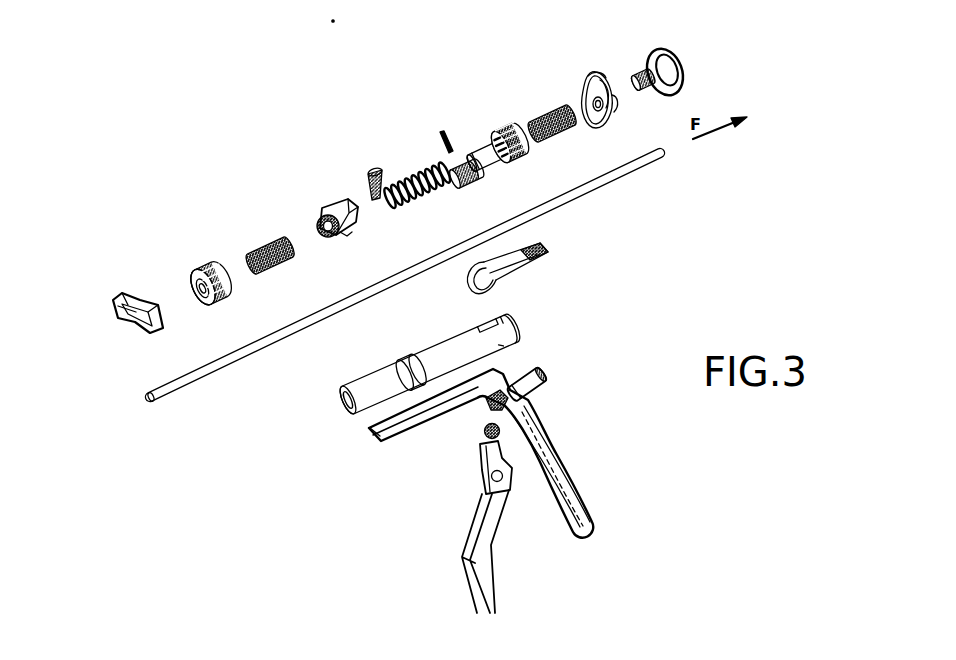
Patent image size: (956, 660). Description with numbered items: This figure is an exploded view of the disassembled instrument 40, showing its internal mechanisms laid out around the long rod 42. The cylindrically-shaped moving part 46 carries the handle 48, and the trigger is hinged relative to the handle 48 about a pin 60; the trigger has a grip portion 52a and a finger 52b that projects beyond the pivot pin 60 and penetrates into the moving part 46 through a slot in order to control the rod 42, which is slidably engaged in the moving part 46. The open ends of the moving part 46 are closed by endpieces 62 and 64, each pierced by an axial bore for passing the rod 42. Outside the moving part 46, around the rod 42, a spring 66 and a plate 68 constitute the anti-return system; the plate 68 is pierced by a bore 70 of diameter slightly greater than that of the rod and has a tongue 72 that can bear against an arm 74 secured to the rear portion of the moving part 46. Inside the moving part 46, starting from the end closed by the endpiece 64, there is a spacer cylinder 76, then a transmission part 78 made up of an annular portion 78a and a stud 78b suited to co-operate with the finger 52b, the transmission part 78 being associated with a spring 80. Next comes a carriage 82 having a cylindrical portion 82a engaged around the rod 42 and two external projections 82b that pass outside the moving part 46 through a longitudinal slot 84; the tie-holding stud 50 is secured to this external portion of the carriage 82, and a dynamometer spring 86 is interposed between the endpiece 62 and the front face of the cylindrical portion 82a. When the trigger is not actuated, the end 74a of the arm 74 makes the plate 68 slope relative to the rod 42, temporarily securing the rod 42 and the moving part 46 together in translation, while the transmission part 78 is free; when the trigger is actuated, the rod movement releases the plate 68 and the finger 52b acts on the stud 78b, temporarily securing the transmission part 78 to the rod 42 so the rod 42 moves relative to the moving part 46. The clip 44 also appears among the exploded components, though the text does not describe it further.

The instrument 40 is at (306, 124).
The rod 42 is at (622, 172).
The clip 44 is at (118, 296).
The moving part 46 is at (520, 347).
The handle 48 is at (586, 488).
The tie-holding stud 50 is at (372, 172).
The grip portion 52a is at (498, 600).
The finger 52b is at (482, 470).
The pin 60 is at (486, 433).
The endpiece 62 is at (193, 268).
The endpiece 64 is at (513, 122).
The spring 66 is at (545, 115).
The plate 68 is at (613, 100).
The bore 70 is at (592, 126).
The tongue 72 is at (592, 76).
The arm 74 is at (515, 270).
The end of the arm 74a is at (536, 250).
The spacer cylinder 76 is at (478, 152).
The transmission part 78 is at (440, 130).
The annular portion 78a is at (478, 172).
The stud 78b is at (458, 188).
The spring 80 is at (410, 178).
The carriage 82 is at (302, 211).
The cylindrical portion 82a is at (345, 235).
The external projections 82b is at (330, 208).
The longitudinal slot 84 is at (372, 385).
The dynamometer spring 86 is at (262, 244).